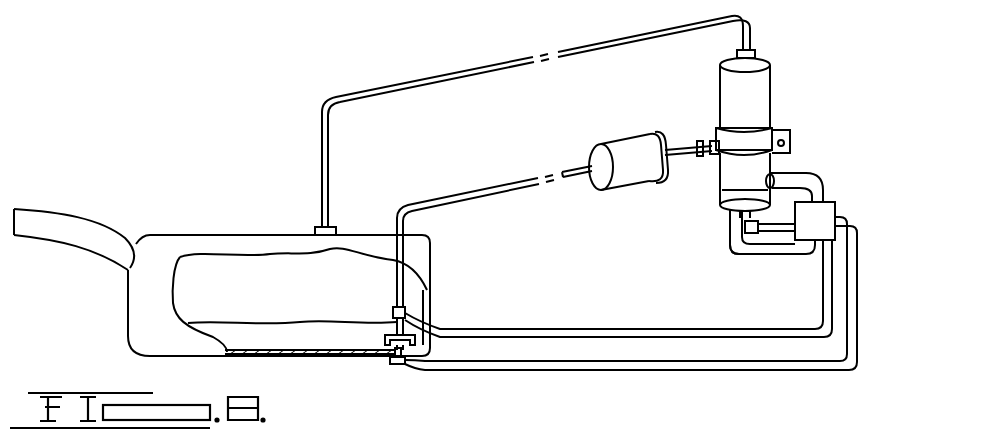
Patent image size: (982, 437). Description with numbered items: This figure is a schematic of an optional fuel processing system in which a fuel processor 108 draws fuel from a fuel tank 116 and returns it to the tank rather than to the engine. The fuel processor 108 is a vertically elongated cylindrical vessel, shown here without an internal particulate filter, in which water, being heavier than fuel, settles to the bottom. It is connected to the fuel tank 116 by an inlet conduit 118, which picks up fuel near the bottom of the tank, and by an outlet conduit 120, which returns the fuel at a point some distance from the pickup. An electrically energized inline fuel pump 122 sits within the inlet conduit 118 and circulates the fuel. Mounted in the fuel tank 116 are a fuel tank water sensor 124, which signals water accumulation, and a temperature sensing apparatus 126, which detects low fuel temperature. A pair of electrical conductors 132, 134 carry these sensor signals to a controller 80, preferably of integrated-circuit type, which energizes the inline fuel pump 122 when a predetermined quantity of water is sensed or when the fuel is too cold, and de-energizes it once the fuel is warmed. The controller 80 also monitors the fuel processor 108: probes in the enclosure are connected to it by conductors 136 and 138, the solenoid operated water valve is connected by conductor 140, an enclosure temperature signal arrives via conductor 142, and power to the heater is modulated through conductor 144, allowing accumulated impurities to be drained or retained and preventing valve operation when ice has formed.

The controller 80 is at (834, 204).
The fuel processor 108 is at (787, 82).
The fuel tank 116 is at (215, 233).
The inlet conduit 118 is at (485, 156).
The outlet conduit 120 is at (482, 62).
The inline fuel pump 122 is at (632, 107).
The fuel tank water sensor 124 is at (404, 308).
The temperature sensing apparatus 126 is at (389, 360).
The electrical conductor 132 is at (652, 330).
The electrical conductor 134 is at (673, 370).
The conductor 136 is at (770, 198).
The conductor 138 is at (793, 172).
The conductor 140 is at (780, 228).
The conductor 142 is at (727, 233).
The conductor 144 is at (728, 242).